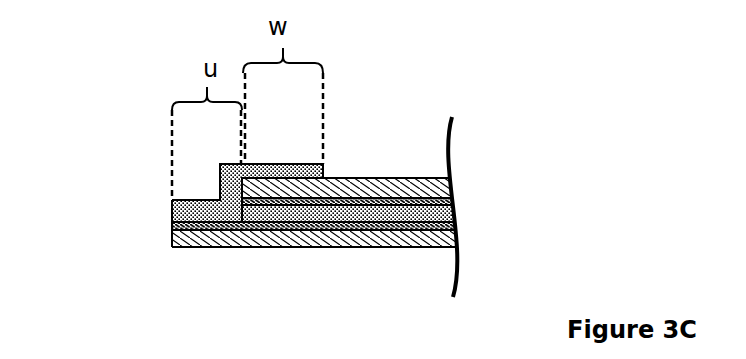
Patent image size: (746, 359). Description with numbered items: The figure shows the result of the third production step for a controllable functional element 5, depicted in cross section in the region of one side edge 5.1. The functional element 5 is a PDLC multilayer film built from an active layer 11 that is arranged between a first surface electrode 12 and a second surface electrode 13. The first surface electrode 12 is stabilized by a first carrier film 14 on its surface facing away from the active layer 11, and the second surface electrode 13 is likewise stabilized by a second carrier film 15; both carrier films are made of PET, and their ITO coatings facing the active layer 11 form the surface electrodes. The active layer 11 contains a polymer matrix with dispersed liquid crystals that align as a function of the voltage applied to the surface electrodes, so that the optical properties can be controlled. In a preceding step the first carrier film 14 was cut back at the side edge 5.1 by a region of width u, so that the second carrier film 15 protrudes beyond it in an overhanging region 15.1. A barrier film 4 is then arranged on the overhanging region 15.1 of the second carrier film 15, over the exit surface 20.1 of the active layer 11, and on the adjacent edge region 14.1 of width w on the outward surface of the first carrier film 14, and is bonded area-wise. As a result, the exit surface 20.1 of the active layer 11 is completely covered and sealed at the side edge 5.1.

The barrier film 4 is at (318, 170).
The functional element 5 is at (532, 148).
The side edge 5.1 is at (132, 215).
The active layer 11 is at (447, 215).
The first surface electrode 12 is at (446, 201).
The second surface electrode 13 is at (451, 231).
The first carrier film 14 is at (423, 190).
The edge region 14.1 is at (272, 173).
The second carrier film 15 is at (452, 246).
The overhanging region 15.1 is at (207, 240).
The exit surface 20.1 is at (232, 212).